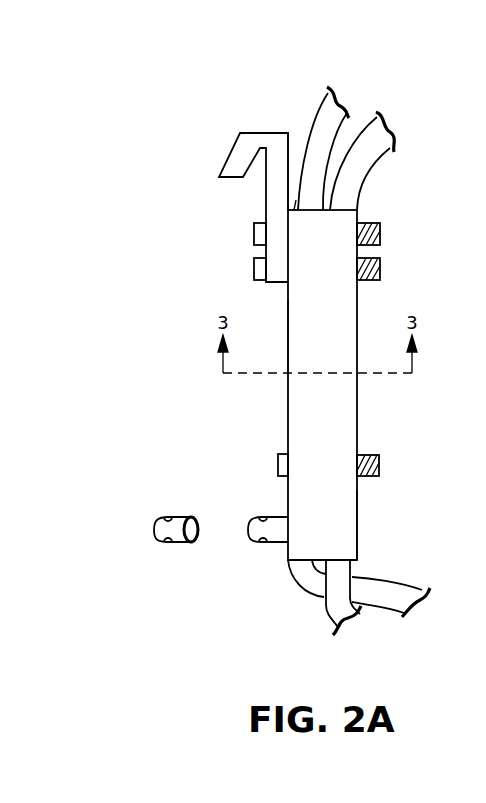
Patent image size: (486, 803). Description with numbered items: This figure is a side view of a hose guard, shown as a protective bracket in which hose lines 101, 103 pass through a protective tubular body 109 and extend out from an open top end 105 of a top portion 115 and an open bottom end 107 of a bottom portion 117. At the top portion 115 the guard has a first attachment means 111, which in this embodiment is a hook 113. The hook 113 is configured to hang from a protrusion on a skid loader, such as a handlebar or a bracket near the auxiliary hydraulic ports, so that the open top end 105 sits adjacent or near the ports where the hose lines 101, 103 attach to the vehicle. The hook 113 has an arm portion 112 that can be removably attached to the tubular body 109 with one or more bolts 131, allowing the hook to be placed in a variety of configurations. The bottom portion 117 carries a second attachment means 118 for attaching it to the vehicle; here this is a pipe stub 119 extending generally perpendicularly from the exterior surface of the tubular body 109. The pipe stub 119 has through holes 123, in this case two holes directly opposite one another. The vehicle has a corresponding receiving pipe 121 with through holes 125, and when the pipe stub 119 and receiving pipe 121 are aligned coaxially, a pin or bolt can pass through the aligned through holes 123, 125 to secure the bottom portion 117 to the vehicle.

The hose line 101 is at (323, 95).
The hose line 103 is at (377, 157).
The open top end 105 is at (295, 208).
The open bottom end 107 is at (357, 568).
The protective tubular body 109 is at (357, 423).
The first attachment means 111 is at (242, 130).
The arm portion 112 is at (289, 210).
The hook 113 is at (220, 170).
The top portion 115 is at (288, 335).
The bottom portion 117 is at (357, 527).
The second attachment means 118 is at (275, 515).
The pipe stub 119 is at (273, 545).
The receiving pipe 121 is at (153, 530).
The through hole 123 is at (262, 516).
The through hole 125 is at (168, 516).
The bolt 131 is at (254, 268).